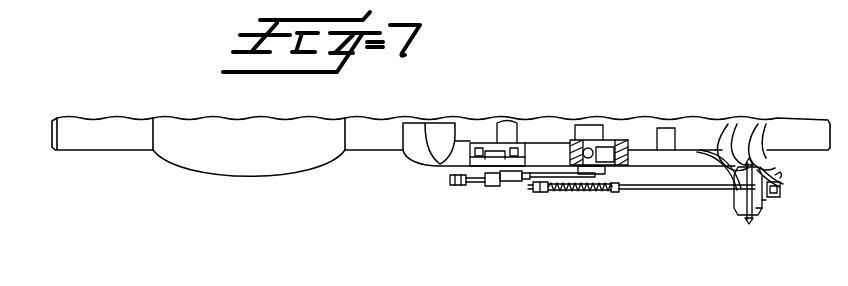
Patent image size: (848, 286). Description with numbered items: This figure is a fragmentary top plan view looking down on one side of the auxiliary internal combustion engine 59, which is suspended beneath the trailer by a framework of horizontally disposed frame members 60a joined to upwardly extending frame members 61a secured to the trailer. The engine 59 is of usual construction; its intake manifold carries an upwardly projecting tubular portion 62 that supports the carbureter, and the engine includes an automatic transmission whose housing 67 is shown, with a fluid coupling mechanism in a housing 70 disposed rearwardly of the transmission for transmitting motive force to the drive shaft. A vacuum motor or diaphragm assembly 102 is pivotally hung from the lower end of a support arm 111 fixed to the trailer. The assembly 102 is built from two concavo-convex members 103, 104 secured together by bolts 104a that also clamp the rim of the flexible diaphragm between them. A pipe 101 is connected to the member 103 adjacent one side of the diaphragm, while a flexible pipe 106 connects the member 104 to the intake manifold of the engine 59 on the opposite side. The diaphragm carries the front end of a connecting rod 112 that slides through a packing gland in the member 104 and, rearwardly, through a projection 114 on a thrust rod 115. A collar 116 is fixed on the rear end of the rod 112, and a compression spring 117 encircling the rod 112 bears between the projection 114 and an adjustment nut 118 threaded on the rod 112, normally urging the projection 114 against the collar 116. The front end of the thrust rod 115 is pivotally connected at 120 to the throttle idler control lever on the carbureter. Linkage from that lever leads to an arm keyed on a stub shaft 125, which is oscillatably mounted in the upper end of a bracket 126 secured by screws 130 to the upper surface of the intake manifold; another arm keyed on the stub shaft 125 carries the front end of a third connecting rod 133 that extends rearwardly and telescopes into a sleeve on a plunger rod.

The fluid coupling housing 70 is at (112, 150).
The automatic transmission housing 67 is at (271, 168).
The auxiliary internal combustion engine 59 is at (382, 148).
The screws 130 is at (514, 147).
The bracket 126 is at (524, 142).
The tubular portion 62 is at (616, 140).
The upwardly extending frame member 61a is at (731, 128).
The horizontally disposed frame member 60a is at (758, 126).
The thrust rod 115 is at (562, 180).
The flexible pipe 106 is at (700, 156).
The pipe 101 is at (782, 174).
The support arm 111 is at (781, 188).
The pivotal connection 120 is at (600, 175).
The adjustment nut 118 is at (619, 192).
The connecting rod 112 is at (718, 190).
The concavo-convex member 103 is at (764, 202).
The bolts 104a is at (748, 221).
The diaphragm assembly 102 is at (758, 213).
The concavo-convex member 104 is at (736, 208).
The third connecting rod 133 is at (466, 186).
The stub shaft 125 is at (492, 187).
The collar 116 is at (540, 193).
The projection 114 is at (550, 194).
The compression spring 117 is at (597, 191).